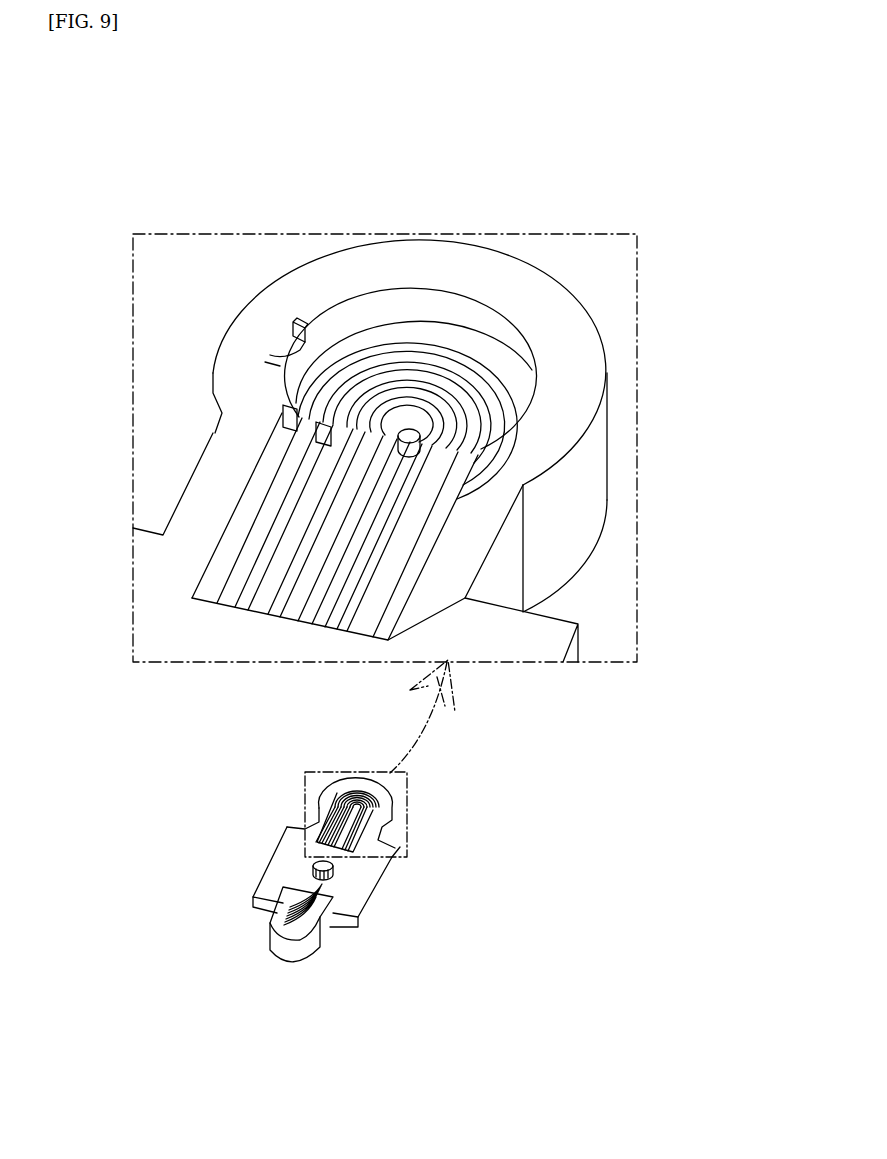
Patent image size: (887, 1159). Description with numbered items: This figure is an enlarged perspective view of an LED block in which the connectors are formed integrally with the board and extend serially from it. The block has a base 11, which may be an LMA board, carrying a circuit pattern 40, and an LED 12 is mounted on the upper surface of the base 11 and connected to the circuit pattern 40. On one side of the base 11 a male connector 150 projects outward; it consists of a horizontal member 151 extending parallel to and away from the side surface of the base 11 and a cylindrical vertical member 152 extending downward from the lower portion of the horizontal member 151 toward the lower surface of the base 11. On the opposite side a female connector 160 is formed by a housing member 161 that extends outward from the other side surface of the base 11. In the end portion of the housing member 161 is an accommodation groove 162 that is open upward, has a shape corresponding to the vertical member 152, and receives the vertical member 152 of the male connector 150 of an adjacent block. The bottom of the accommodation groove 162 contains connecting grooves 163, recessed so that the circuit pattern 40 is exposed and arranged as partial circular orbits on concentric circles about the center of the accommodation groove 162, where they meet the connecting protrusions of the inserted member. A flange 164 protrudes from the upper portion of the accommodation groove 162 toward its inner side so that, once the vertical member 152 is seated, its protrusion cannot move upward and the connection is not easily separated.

The base 11 is at (540, 643).
The LED 12 is at (313, 866).
The circuit pattern 40 is at (362, 443).
The male connector 150 is at (214, 935).
The horizontal member 151 is at (277, 926).
The vertical member 152 is at (283, 953).
The female connector 160 is at (530, 255).
The housing member 161 is at (580, 502).
The accommodation groove 162 is at (456, 321).
The connecting grooves 163 is at (320, 442).
The flange 164 is at (272, 352).